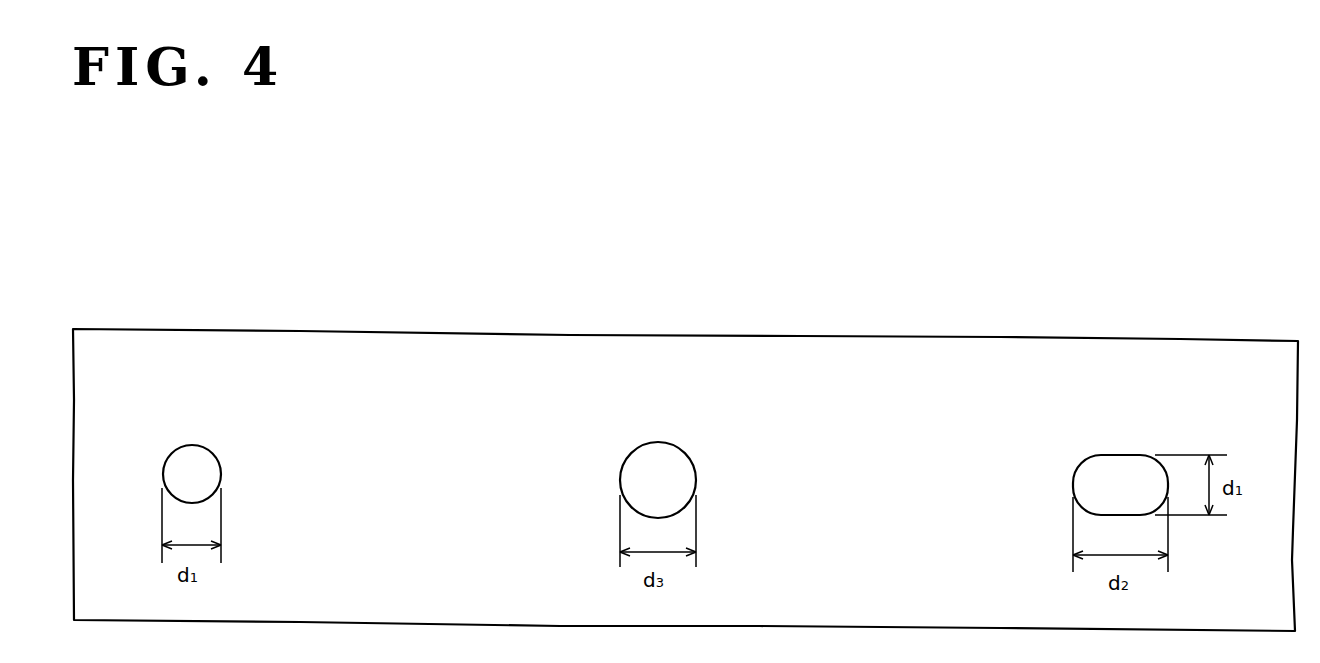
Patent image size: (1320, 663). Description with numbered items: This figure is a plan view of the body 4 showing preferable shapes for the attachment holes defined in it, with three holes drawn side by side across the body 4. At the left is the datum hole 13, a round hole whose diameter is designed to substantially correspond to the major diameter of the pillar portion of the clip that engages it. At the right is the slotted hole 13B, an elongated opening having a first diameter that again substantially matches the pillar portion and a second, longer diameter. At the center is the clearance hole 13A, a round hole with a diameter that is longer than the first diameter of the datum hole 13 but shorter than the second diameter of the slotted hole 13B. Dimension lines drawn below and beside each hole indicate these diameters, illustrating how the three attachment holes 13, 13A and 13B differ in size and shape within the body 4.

The body 4 is at (573, 350).
The datum hole 13 is at (199, 447).
The clearance hole 13A is at (670, 447).
The slotted hole 13B is at (1130, 452).